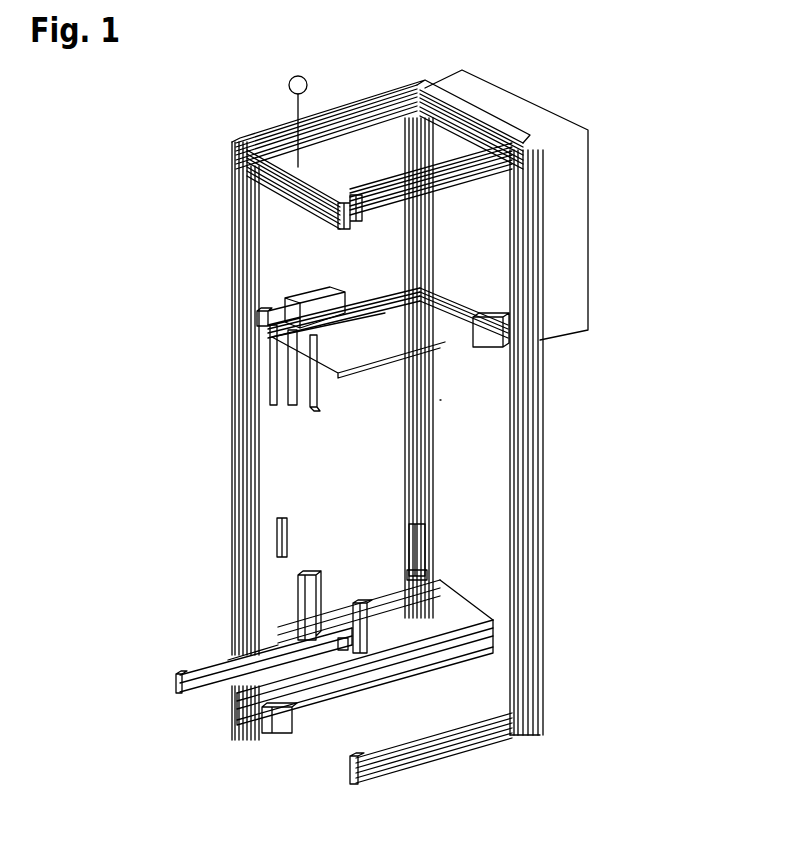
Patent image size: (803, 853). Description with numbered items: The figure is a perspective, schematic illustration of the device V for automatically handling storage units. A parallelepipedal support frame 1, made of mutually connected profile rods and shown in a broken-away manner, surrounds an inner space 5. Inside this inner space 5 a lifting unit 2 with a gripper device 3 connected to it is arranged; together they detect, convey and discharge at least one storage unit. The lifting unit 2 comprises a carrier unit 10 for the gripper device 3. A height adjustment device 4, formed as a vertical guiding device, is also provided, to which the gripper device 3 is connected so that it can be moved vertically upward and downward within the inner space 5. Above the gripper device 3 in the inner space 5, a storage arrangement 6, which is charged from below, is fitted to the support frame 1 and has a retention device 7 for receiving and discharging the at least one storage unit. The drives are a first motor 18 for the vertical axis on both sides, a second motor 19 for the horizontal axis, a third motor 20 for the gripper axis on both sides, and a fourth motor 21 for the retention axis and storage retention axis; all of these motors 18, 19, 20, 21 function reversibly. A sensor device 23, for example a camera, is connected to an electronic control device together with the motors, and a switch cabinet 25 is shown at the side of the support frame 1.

The device V is at (229, 130).
The support frame 1 is at (240, 210).
The lifting unit 2 is at (316, 532).
The gripper device 3 is at (205, 665).
The height adjustment device 4 is at (265, 358).
The inner space 5 is at (488, 476).
The storage arrangement 6 is at (355, 283).
The retention device 7 is at (380, 372).
The carrier unit 10 is at (488, 635).
The first motor 18 is at (310, 299).
The second motor 19 is at (420, 550).
The third motor 20 is at (307, 590).
The fourth motor 21 is at (492, 328).
The sensor device 23 is at (289, 86).
The switch cabinet 25 is at (568, 228).